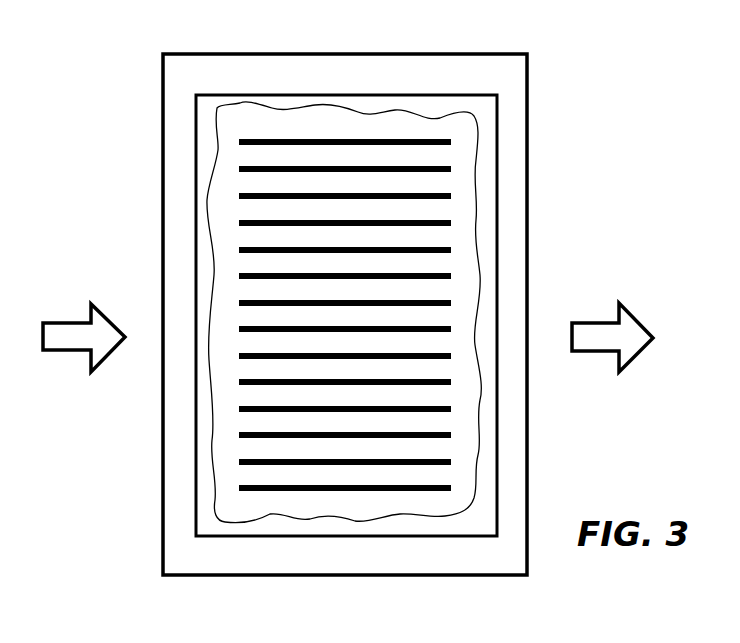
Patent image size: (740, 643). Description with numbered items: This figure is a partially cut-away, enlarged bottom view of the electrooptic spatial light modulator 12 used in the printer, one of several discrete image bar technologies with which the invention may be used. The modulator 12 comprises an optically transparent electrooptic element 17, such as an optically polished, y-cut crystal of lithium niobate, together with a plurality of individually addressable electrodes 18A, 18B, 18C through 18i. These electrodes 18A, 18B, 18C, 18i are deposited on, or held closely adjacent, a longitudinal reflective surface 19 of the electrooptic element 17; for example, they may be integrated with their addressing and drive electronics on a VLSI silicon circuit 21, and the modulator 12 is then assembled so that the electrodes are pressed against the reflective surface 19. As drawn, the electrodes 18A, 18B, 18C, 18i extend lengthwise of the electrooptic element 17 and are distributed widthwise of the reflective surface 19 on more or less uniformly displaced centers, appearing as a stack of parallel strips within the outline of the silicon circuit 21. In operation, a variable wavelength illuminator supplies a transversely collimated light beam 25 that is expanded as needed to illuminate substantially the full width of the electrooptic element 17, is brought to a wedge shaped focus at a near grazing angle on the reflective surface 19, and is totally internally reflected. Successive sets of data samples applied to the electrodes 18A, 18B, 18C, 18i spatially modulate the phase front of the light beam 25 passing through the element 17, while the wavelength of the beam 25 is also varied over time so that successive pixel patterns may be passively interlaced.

The electrooptic spatial light modulator 12 is at (158, 69).
The electrooptic element 17 is at (161, 483).
The reflective surface 19 is at (257, 560).
The VLSI silicon circuit 21 is at (205, 183).
The individually addressable electrode 18A is at (373, 140).
The individually addressable electrode 18B is at (286, 167).
The individually addressable electrode 18C is at (412, 166).
The individually addressable electrode 18i is at (368, 492).
The light beam 25 is at (64, 323).